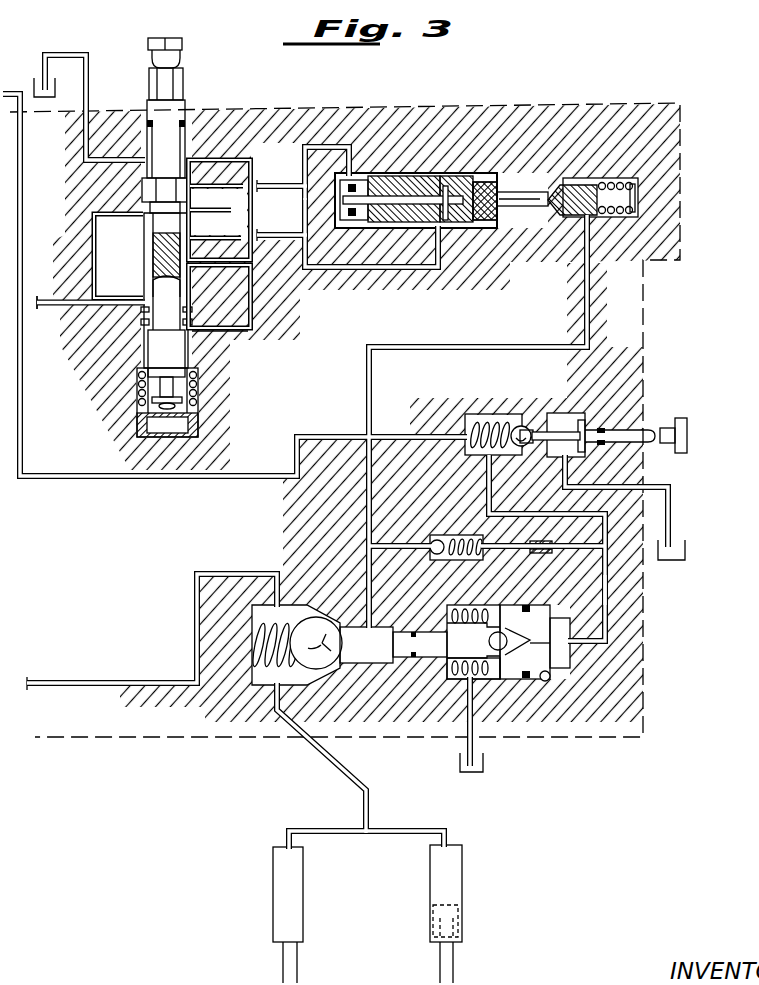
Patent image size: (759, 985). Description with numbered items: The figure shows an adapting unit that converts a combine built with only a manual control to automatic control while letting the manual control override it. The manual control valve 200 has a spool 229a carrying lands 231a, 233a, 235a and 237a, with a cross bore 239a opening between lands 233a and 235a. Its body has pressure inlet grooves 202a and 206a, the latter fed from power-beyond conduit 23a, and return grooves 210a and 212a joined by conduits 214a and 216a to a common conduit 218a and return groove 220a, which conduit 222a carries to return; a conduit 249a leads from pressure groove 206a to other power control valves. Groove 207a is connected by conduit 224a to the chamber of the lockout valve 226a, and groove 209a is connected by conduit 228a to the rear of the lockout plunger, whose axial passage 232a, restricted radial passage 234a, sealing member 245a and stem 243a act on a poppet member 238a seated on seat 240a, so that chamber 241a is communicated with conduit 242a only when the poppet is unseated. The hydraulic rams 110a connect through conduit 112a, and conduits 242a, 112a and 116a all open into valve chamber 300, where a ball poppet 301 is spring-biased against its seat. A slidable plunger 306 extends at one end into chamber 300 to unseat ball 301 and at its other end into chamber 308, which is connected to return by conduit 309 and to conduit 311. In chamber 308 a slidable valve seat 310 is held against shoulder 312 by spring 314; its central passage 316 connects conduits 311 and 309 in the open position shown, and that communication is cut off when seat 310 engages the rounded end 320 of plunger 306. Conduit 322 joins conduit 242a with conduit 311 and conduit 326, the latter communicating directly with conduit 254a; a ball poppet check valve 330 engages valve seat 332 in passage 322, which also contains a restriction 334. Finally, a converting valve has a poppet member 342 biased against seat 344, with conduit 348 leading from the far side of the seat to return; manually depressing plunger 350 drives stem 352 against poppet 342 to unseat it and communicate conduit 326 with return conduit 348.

The conduit 222a is at (68, 54).
The manual control valve 200 is at (143, 101).
The spool 229a is at (175, 112).
The land 231a is at (188, 137).
The annular groove 220a is at (190, 160).
The annular groove 209a is at (192, 186).
The conduit 249a is at (192, 211).
The annular groove 207a is at (192, 239).
The land 233a is at (146, 208).
The pressure inlet groove 206a is at (118, 256).
The groove 212a is at (143, 265).
The cross bore 239a is at (153, 284).
The conduit 216a is at (186, 298).
The pressure inlet groove 202a is at (143, 306).
The power-beyond conduit 23a is at (56, 307).
The land 235a is at (191, 310).
The groove 210a is at (143, 362).
The land 237a is at (182, 338).
The conduit 214a is at (242, 331).
The common conduit 218a is at (258, 183).
The conduit 228a is at (335, 146).
The conduit 224a is at (347, 268).
The lockout valve 226a is at (454, 170).
The annular sealing member 245a is at (382, 178).
The axial passage 232a is at (395, 204).
The restricted radial passage 234a is at (447, 220).
The chamber 241a is at (488, 181).
The stem 243a is at (532, 219).
The seat 240a is at (570, 178).
The poppet member 238a is at (610, 175).
The conduit 254a is at (253, 464).
The conduit 242a is at (367, 503).
The poppet member 342 is at (525, 423).
The seat 344 is at (522, 456).
The stem 352 is at (565, 430).
The plunger 350 is at (688, 424).
The conduit 348 is at (673, 485).
The conduit 326 is at (488, 497).
The conduit 311 is at (608, 585).
The conduit 322 is at (390, 545).
The valve seat 332 is at (437, 560).
The ball poppet check valve 330 is at (437, 540).
The restriction 334 is at (540, 543).
The conduit 116a is at (75, 682).
The valve chamber 300 is at (266, 684).
The ball poppet 301 is at (330, 671).
The slidable plunger 306 is at (437, 658).
The spring 314 is at (495, 606).
The rounded end 320 is at (499, 632).
The central passage 316 is at (528, 640).
The slidable valve seat 310 is at (532, 640).
The shoulder 312 is at (550, 678).
The chamber 308 is at (482, 678).
The conduit 309 is at (473, 737).
The conduit 112a is at (305, 828).
The hydraulic rams 110a is at (285, 980).